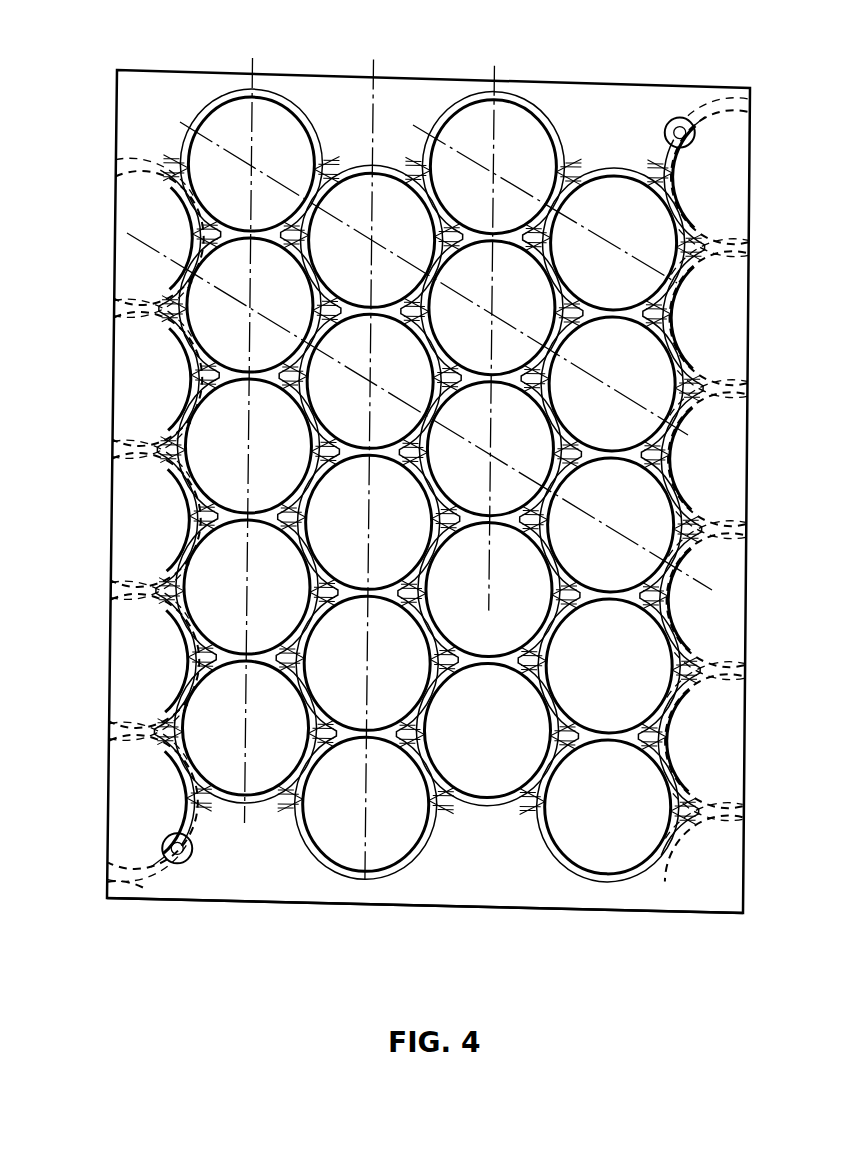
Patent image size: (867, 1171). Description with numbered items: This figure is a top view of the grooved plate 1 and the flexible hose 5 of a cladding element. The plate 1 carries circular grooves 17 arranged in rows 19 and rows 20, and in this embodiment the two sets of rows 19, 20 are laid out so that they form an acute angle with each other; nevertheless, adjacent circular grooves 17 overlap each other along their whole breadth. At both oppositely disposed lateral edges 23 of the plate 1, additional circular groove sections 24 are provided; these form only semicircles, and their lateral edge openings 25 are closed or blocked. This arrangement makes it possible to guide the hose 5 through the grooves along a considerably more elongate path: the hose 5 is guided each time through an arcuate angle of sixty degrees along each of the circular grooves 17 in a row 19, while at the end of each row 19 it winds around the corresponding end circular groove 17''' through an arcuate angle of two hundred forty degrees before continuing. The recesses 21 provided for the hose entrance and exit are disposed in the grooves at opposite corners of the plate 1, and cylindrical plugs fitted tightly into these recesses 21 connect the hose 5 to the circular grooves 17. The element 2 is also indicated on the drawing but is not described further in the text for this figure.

The plate 1 is at (259, 914).
The housing wall 2 is at (512, 896).
The hose 5 is at (356, 878).
The circular grooves 17 is at (189, 445).
The circular groove 17''' is at (249, 406).
The rows 19 is at (370, 72).
The rows 20 is at (617, 390).
The recesses 21 is at (679, 116).
The lateral edges 23 is at (118, 470).
The additional circular groove sections 24 is at (135, 745).
The lateral edge openings 25 is at (743, 250).